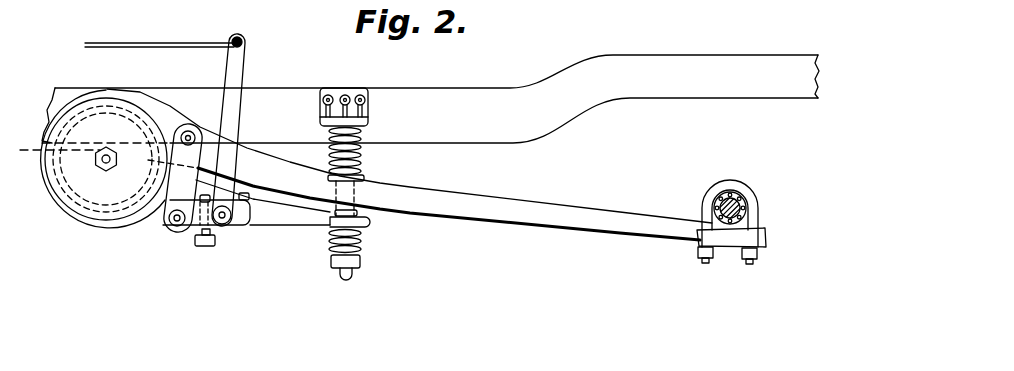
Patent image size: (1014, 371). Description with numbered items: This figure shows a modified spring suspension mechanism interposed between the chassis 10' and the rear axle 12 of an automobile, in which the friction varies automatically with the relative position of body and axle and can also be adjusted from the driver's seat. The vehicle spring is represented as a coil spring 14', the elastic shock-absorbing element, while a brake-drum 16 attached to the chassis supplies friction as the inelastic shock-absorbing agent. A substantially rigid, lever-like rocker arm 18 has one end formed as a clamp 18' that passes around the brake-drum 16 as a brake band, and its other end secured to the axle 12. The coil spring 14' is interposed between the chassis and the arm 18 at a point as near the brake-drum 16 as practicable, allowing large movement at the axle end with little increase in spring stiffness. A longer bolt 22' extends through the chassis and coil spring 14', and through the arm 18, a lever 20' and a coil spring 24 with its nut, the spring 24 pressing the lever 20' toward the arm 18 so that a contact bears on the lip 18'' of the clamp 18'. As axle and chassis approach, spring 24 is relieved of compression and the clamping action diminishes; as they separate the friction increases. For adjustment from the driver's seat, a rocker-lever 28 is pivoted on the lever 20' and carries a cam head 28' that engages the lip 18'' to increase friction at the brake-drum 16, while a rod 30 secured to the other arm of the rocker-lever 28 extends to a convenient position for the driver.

The chassis 10' is at (419, 93).
The rear axle 12 is at (740, 195).
The coil spring 14' is at (394, 152).
The brake-drum 16 is at (88, 187).
The rocker arm 18 is at (409, 193).
The clamp 18' is at (122, 197).
The lip 18'' is at (263, 247).
The lever 20' is at (333, 282).
The bolt 22' is at (382, 249).
The coil spring 24 is at (325, 247).
The rocker-lever 28 is at (264, 130).
The cam head 28' is at (246, 275).
The rod 30 is at (165, 43).